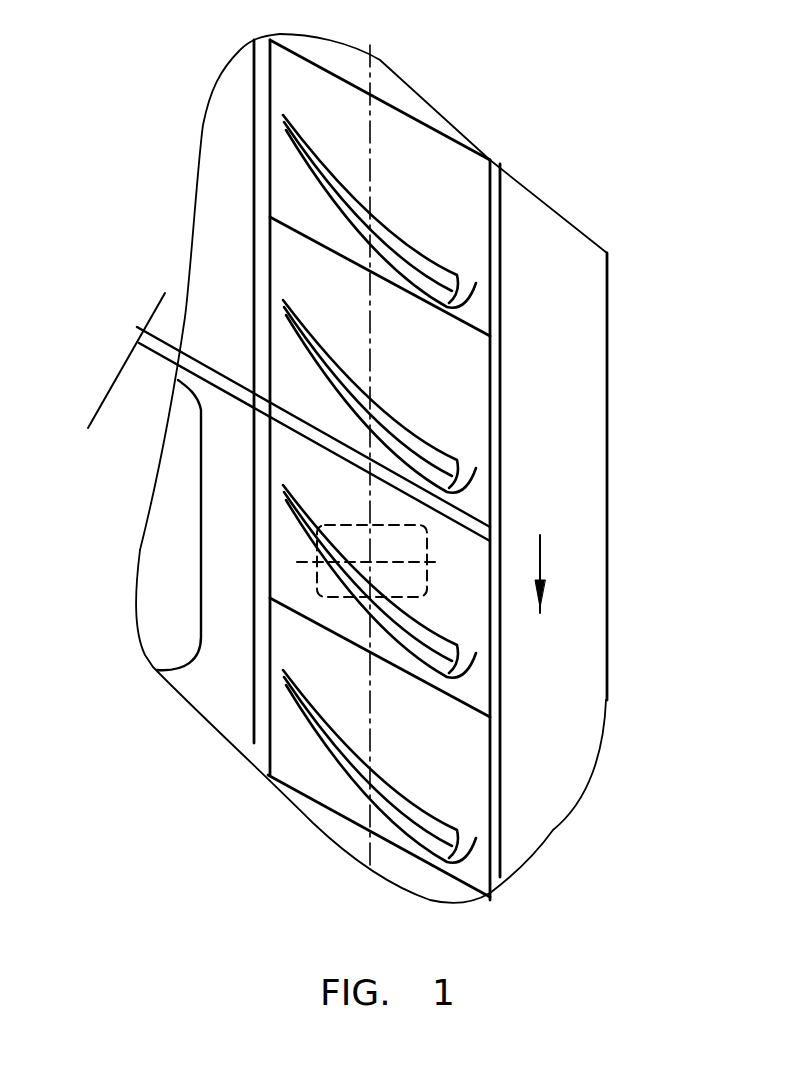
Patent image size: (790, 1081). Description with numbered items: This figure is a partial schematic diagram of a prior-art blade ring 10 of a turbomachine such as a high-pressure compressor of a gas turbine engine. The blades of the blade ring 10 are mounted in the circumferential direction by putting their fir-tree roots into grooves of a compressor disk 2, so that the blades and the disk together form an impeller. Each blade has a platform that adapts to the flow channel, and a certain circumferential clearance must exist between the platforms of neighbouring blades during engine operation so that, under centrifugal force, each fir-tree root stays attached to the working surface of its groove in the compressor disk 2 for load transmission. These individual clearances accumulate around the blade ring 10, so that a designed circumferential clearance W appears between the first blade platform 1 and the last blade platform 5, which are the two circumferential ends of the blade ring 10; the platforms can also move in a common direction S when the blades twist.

The blade ring 10 is at (263, 153).
The first blade platform 1 is at (297, 580).
The last blade platform 5 is at (460, 415).
The compressor disk 2 is at (540, 710).